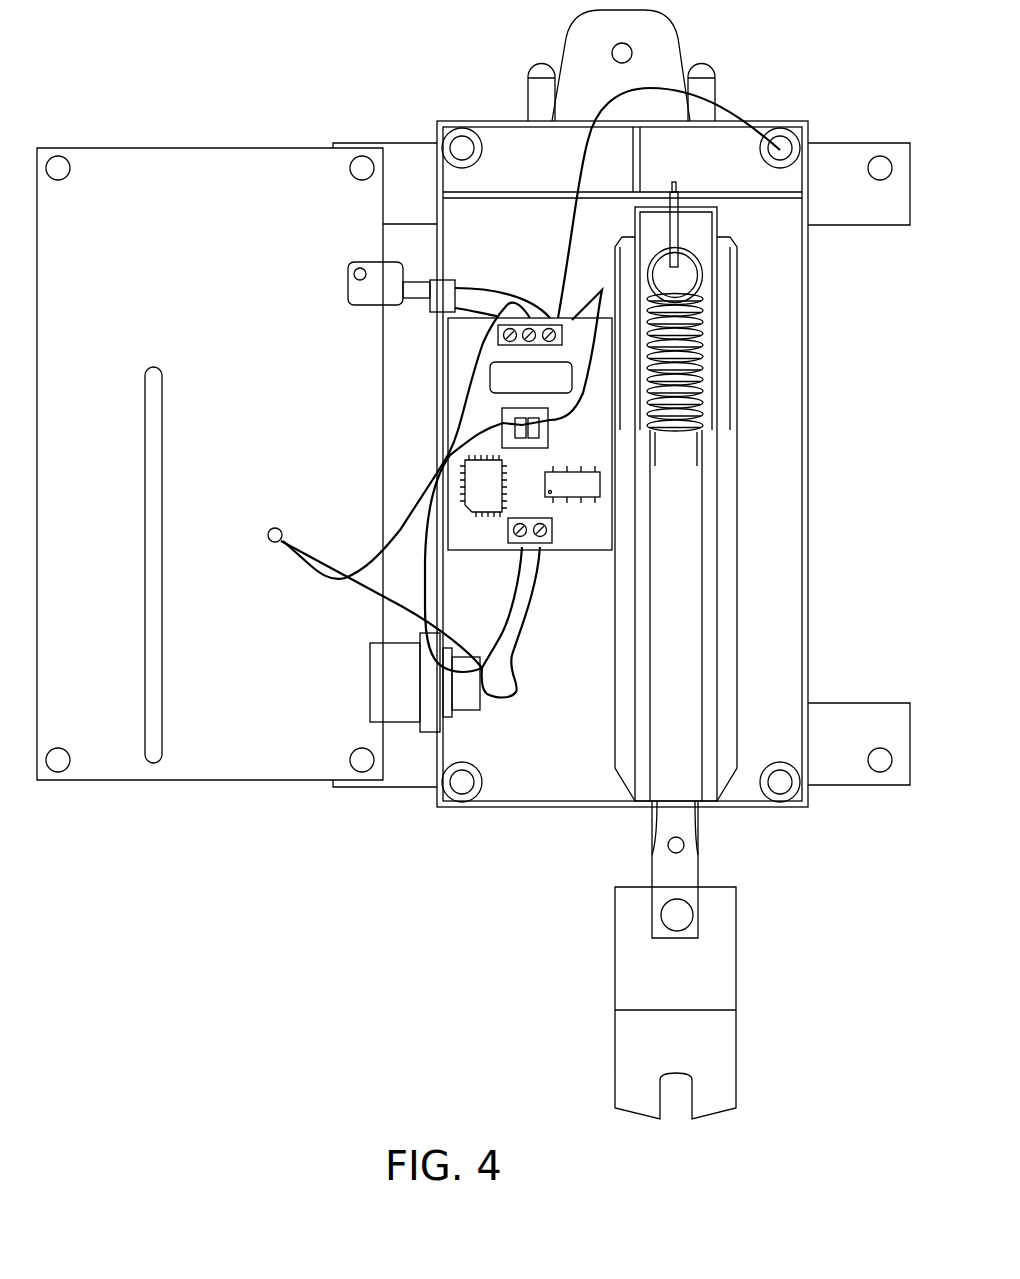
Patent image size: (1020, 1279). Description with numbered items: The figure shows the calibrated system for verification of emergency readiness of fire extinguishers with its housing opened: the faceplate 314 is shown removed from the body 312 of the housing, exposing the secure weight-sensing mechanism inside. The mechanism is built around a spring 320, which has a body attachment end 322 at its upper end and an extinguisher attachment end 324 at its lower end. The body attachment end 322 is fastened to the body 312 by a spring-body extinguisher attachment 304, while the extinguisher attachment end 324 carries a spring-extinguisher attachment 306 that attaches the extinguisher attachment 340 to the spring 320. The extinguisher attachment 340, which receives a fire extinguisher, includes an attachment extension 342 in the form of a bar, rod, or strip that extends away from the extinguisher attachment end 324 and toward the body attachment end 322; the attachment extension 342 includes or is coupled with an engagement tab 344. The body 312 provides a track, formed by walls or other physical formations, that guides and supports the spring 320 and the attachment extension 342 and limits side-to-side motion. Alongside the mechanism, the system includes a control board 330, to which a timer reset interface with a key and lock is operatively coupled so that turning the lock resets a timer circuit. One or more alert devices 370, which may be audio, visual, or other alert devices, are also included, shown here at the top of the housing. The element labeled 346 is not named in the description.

The body 312 is at (153, 157).
The faceplate 314 is at (807, 525).
The alert devices 370 is at (537, 91).
The spring-body extinguisher attachment 304 is at (683, 205).
The guide rail 346 is at (720, 660).
The body attachment end 322 is at (710, 277).
The spring 320 is at (700, 372).
The engagement tab 344 is at (700, 425).
The attachment extension 342 is at (700, 585).
The extinguisher attachment end 324 is at (713, 822).
The spring-extinguisher attachment 306 is at (665, 845).
The extinguisher attachment 340 is at (624, 1042).
The control board 330 is at (455, 355).